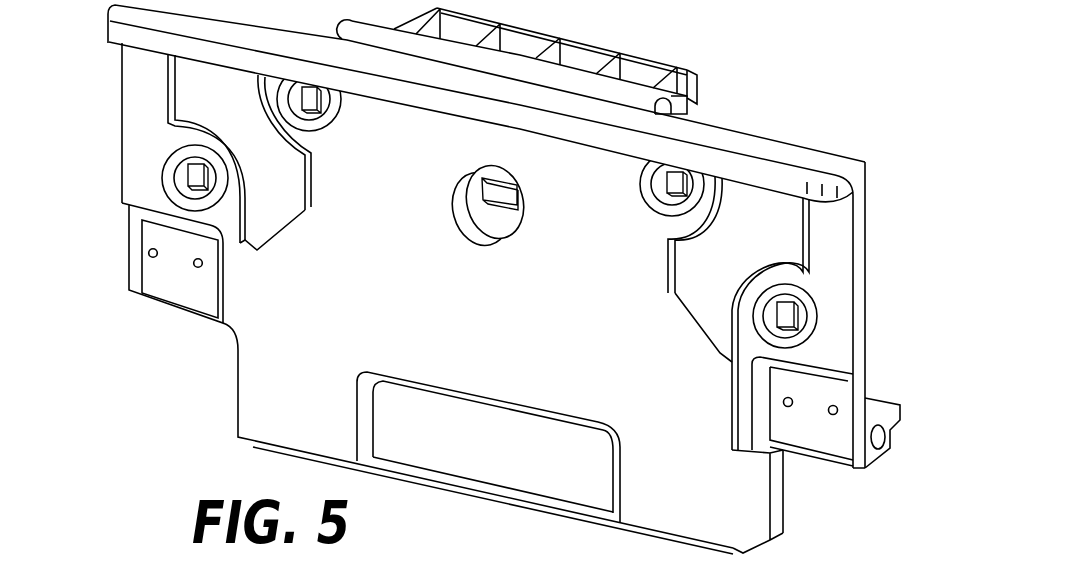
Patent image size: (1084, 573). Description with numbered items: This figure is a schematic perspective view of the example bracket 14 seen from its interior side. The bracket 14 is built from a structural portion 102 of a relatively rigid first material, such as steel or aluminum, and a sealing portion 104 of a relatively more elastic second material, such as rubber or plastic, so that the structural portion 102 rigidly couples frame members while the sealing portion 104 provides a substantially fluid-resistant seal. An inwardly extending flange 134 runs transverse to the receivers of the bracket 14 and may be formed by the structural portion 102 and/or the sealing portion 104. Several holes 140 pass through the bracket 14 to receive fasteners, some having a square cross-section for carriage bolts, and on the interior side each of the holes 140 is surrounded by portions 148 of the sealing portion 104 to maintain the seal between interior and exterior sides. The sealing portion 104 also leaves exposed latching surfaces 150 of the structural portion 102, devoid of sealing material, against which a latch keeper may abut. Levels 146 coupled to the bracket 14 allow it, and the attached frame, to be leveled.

The bracket 14 is at (788, 108).
The inwardly extending flange 134 is at (107, 45).
The sealing portion 104 is at (130, 84).
The structural portion 102 is at (838, 384).
The holes 140 is at (187, 163).
The portions of the sealing portion 148 is at (308, 143).
The latching surfaces 150 is at (155, 293).
The levels 146 is at (887, 443).